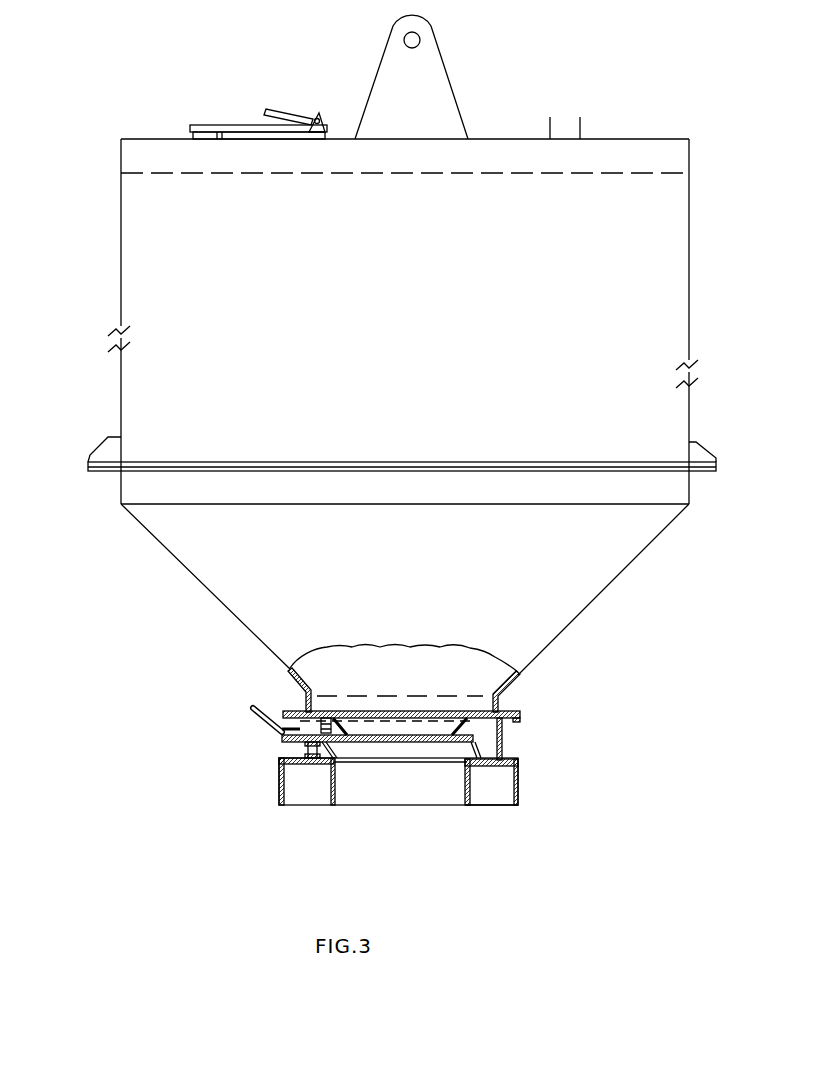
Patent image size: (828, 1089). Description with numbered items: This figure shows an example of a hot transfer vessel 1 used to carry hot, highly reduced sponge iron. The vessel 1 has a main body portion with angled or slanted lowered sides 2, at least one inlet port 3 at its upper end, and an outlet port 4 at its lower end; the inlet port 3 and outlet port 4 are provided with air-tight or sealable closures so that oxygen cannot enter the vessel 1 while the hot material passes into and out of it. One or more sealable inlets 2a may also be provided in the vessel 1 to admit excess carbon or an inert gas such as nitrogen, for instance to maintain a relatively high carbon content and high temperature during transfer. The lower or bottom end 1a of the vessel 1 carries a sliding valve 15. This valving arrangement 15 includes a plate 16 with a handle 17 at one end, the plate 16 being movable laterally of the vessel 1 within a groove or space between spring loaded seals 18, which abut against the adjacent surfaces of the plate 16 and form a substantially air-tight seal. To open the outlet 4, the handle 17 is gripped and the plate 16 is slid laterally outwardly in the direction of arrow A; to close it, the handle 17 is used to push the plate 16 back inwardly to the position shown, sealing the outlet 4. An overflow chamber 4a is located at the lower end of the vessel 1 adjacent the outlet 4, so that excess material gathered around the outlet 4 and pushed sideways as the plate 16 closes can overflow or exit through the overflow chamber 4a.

The vessel 1 is at (97, 312).
The lower or bottom end 1a is at (444, 819).
The angled or slanted lowered sides 2 is at (218, 606).
The sealable inlets 2a is at (570, 120).
The inlet port 3 is at (248, 115).
The outlet port 4 is at (202, 792).
The overflow chamber 4a is at (507, 783).
The sliding valve 15 is at (357, 746).
The plate 16 is at (417, 743).
The handle 17 is at (263, 723).
The spring loaded seals 18 is at (330, 710).